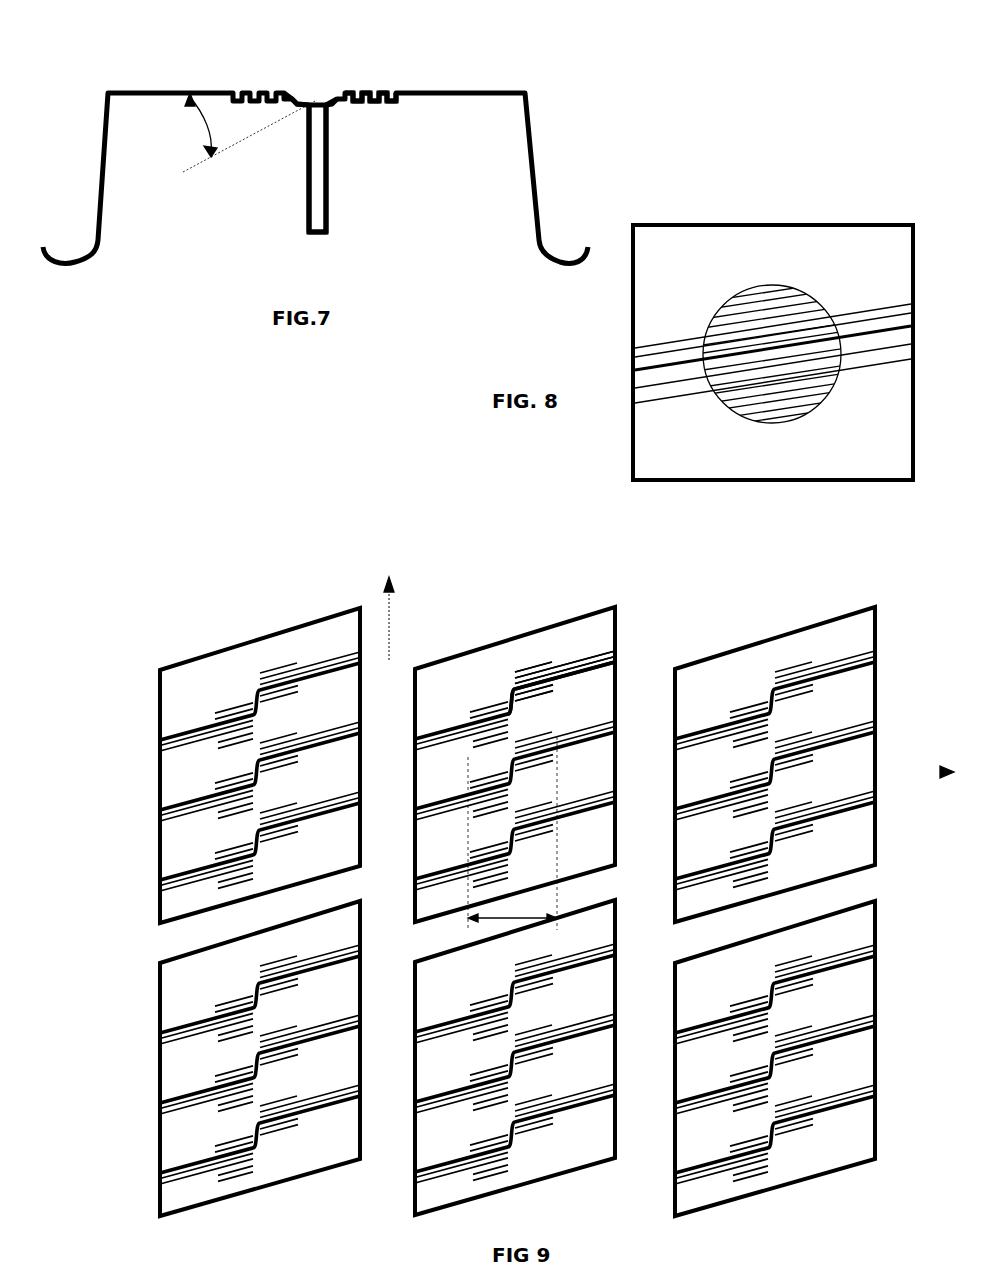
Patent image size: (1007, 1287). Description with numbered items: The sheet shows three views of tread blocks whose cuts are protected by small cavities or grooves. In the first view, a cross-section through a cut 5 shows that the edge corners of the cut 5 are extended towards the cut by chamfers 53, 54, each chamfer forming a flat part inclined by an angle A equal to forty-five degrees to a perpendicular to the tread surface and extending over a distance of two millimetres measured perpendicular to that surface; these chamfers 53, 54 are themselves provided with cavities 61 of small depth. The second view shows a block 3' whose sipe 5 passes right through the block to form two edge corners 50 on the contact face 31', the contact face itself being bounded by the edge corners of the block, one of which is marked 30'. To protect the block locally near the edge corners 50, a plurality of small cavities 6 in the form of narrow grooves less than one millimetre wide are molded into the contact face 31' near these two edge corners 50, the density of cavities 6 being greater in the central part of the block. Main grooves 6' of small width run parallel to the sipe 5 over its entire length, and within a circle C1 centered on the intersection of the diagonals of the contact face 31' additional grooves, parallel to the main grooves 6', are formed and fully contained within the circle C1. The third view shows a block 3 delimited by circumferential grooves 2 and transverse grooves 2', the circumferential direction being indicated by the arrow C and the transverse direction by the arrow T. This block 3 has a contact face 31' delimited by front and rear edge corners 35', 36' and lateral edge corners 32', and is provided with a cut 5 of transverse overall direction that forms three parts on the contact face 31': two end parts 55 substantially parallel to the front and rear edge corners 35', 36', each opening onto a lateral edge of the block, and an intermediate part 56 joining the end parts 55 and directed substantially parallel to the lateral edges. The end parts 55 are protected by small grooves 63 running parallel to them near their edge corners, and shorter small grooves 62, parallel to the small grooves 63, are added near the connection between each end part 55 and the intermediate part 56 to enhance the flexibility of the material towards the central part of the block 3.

In FIG. 9, the circumferential grooves 2 is at (517, 918).
In FIG. 9, the transverse grooves 2' is at (884, 894).
In FIG. 7, the block 3 is at (315, 154).
In FIG. 9, the block 3 is at (515, 729).
In FIG. 8, the block 3' is at (747, 205).
In FIG. 7, the cut 5 is at (317, 167).
In FIG. 8, the cut 5 is at (853, 340).
In FIG. 9, the cut 5 is at (618, 642).
In FIG. 7, the cavities 6 is at (389, 56).
In FIG. 8, the cavities 6 is at (798, 325).
In FIG. 9, the cavities 6 is at (585, 694).
In FIG. 8, the main grooves 6' is at (797, 379).
In FIG. 8, the panel edge 30' is at (754, 479).
In FIG. 8, the contact face 31' is at (773, 352).
In FIG. 9, the contact face 31' is at (574, 854).
In FIG. 9, the lateral edge corners 32' is at (515, 762).
In FIG. 9, the front edge corner 35' is at (439, 588).
In FIG. 9, the rear edge corner 36' is at (645, 900).
In FIG. 8, the edge corners 50 is at (645, 372).
In FIG. 7, the chamfer 53 is at (300, 100).
In FIG. 7, the chamfer 54 is at (335, 100).
In FIG. 9, the end parts 55 is at (575, 672).
In FIG. 9, the intermediate part 56 is at (510, 700).
In FIG. 7, the cavities 61 is at (330, 100).
In FIG. 9, the small grooves 62 is at (533, 667).
In FIG. 9, the small grooves 63 is at (597, 655).
In FIG. 7, the angle A is at (244, 132).
In FIG. 9, the arrow indicating circumferential direction C is at (393, 605).
In FIG. 8, the circle C1 is at (770, 290).
In FIG. 9, the arrow indicating transverse direction T is at (945, 759).